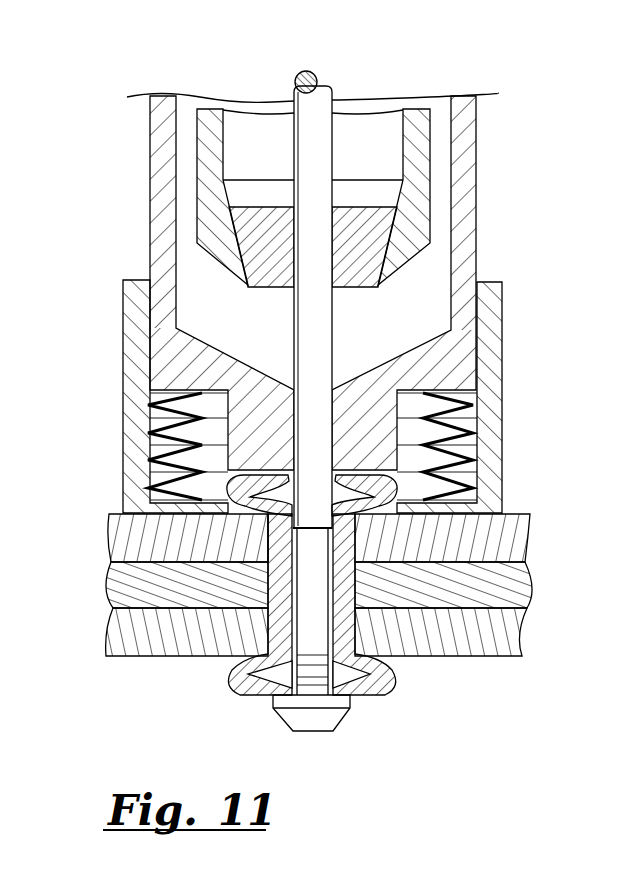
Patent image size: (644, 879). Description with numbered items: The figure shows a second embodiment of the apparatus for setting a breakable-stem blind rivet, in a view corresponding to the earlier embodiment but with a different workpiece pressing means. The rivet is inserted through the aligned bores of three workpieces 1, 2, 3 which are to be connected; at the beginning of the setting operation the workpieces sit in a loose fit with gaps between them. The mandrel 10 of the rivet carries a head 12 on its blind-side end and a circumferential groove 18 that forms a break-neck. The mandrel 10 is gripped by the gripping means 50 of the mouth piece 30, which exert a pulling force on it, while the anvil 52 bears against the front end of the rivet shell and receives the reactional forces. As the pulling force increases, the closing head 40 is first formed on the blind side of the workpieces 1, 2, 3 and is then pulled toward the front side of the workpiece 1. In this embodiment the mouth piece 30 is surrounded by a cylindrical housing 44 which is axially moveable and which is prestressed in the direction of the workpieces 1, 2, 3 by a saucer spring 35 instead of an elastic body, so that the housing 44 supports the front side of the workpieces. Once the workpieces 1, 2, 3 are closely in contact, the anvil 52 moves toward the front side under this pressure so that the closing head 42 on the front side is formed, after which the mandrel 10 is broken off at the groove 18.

The workpiece 1 is at (495, 538).
The workpiece 2 is at (507, 593).
The workpiece 3 is at (513, 642).
The mandrel 10 is at (336, 348).
The head 12 is at (275, 702).
The circumferential groove 18 is at (270, 540).
The mouth piece 30 is at (461, 248).
The saucer spring 35 is at (463, 458).
The closing head 40 is at (392, 674).
The closing head 42 is at (383, 502).
The cylindrical housing 44 is at (492, 407).
The gripping means 50 is at (370, 242).
The anvil 52 is at (372, 393).